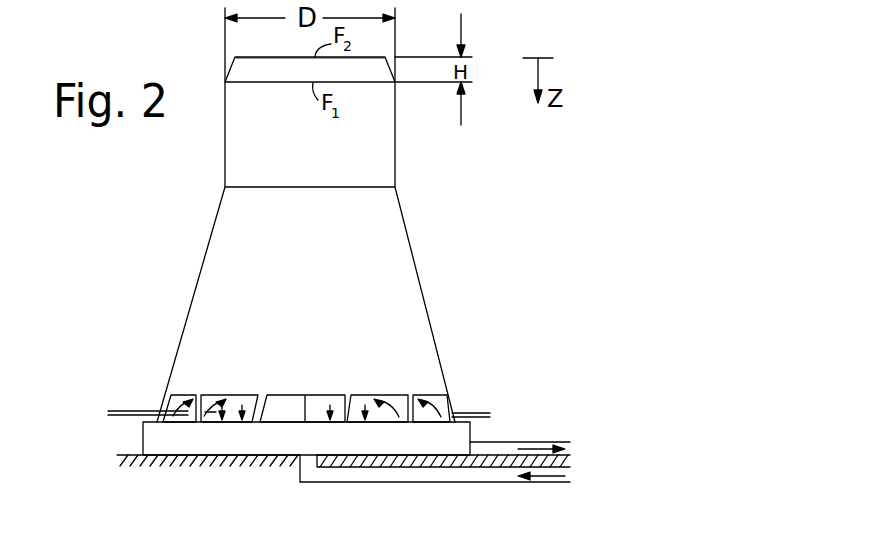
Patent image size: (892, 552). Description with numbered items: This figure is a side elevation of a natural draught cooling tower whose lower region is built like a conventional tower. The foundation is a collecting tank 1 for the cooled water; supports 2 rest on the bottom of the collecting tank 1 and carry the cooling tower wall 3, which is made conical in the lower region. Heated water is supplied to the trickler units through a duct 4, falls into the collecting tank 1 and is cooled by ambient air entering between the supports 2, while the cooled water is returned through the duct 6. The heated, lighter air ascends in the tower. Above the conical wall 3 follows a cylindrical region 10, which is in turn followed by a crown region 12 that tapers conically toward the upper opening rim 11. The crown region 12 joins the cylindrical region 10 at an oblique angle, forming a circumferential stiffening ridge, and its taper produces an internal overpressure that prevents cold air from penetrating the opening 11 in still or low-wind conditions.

The collecting tank 1 is at (143, 438).
The supports 2 is at (163, 402).
The cooling tower wall 3 is at (433, 338).
The duct 4 is at (485, 484).
The duct 6 is at (518, 442).
The cylindrical region 10 is at (397, 165).
The upper opening rim 11 is at (368, 57).
The crown region 12 is at (347, 70).